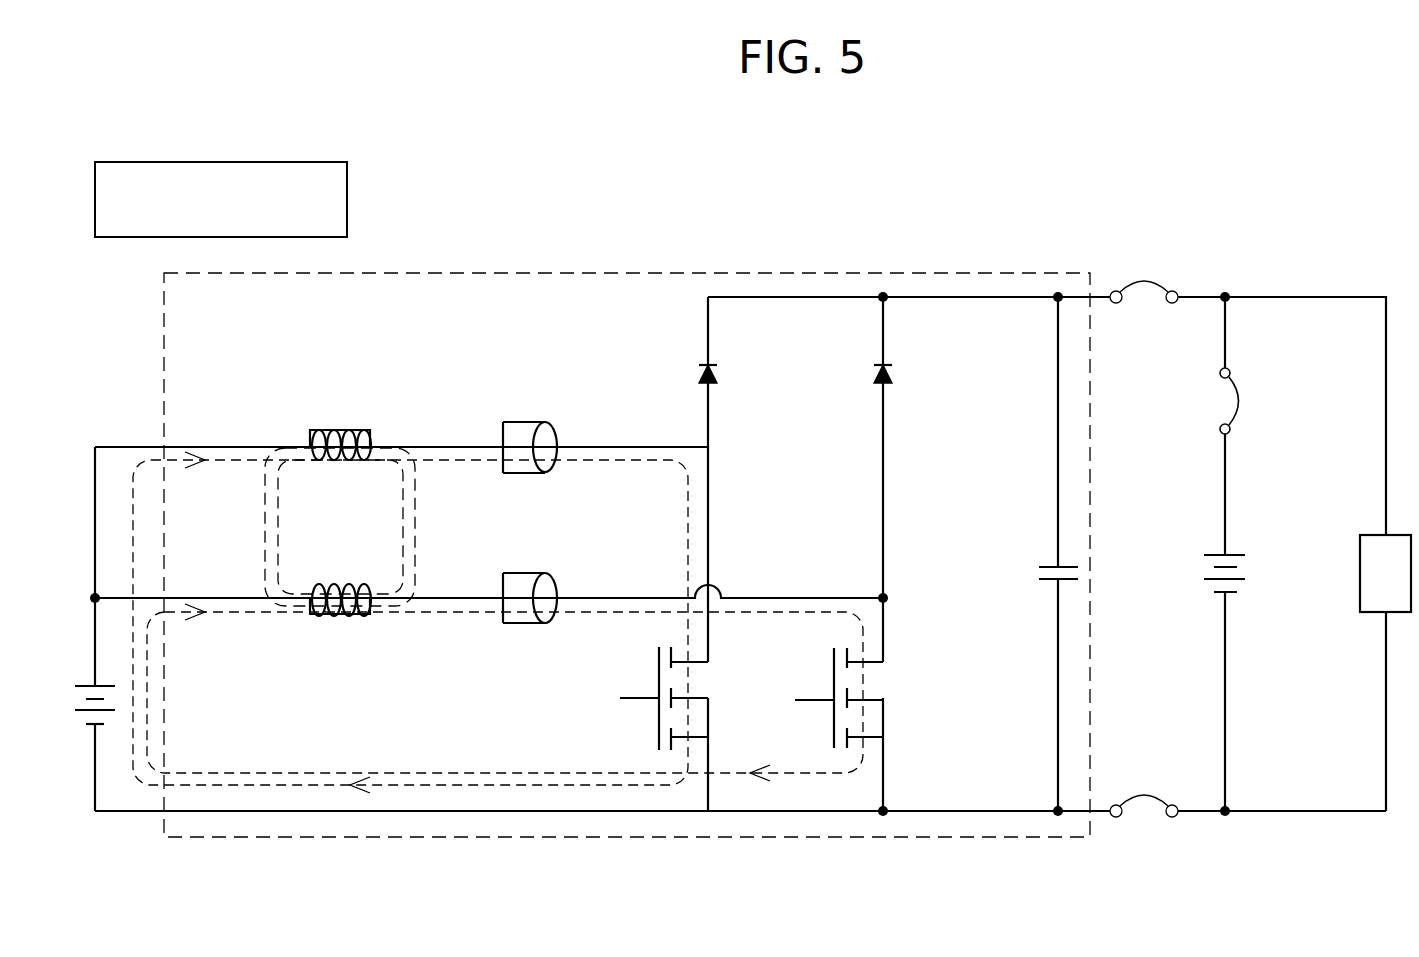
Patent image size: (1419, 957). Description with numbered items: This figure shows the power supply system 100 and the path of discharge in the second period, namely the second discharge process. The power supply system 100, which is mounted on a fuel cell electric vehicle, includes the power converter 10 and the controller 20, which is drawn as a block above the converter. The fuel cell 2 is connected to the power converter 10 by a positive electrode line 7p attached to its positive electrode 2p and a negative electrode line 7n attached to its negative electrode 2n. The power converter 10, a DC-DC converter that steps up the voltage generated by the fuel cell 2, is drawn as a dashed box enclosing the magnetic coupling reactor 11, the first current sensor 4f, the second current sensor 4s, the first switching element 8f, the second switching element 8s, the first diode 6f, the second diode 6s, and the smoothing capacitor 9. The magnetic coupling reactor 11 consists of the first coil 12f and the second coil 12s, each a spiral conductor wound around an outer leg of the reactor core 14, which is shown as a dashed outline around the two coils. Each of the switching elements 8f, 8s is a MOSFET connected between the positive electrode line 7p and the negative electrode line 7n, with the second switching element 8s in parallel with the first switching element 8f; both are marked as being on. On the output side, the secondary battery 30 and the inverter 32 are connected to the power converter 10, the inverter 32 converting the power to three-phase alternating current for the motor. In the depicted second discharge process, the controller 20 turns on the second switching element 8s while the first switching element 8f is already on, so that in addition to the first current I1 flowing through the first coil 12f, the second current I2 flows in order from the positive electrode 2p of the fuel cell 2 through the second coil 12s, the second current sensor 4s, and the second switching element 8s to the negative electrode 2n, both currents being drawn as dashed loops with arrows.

The power supply system 100 is at (1300, 175).
The controller 20 is at (349, 198).
The power converter 10 is at (1040, 272).
The positive electrode line 7p is at (782, 297).
The negative electrode line 7n is at (665, 815).
The fuel cell 2 is at (108, 716).
The positive electrode 2p is at (95, 683).
The negative electrode 2n is at (95, 728).
The magnetic coupling reactor 11 is at (283, 425).
The first coil 12f is at (340, 430).
The second coil 12s is at (340, 618).
The reactor core 14 is at (413, 492).
The first current sensor 4f is at (530, 422).
The second current sensor 4s is at (530, 625).
The first diode 6f is at (718, 375).
The second diode 6s is at (893, 375).
The first switching element 8f is at (656, 662).
The second switching element 8s is at (830, 662).
The smoothing capacitor 9 is at (1048, 565).
The secondary battery 30 is at (1218, 553).
The inverter 32 is at (1360, 575).
The first current I1 is at (152, 440).
The second current I2 is at (778, 788).